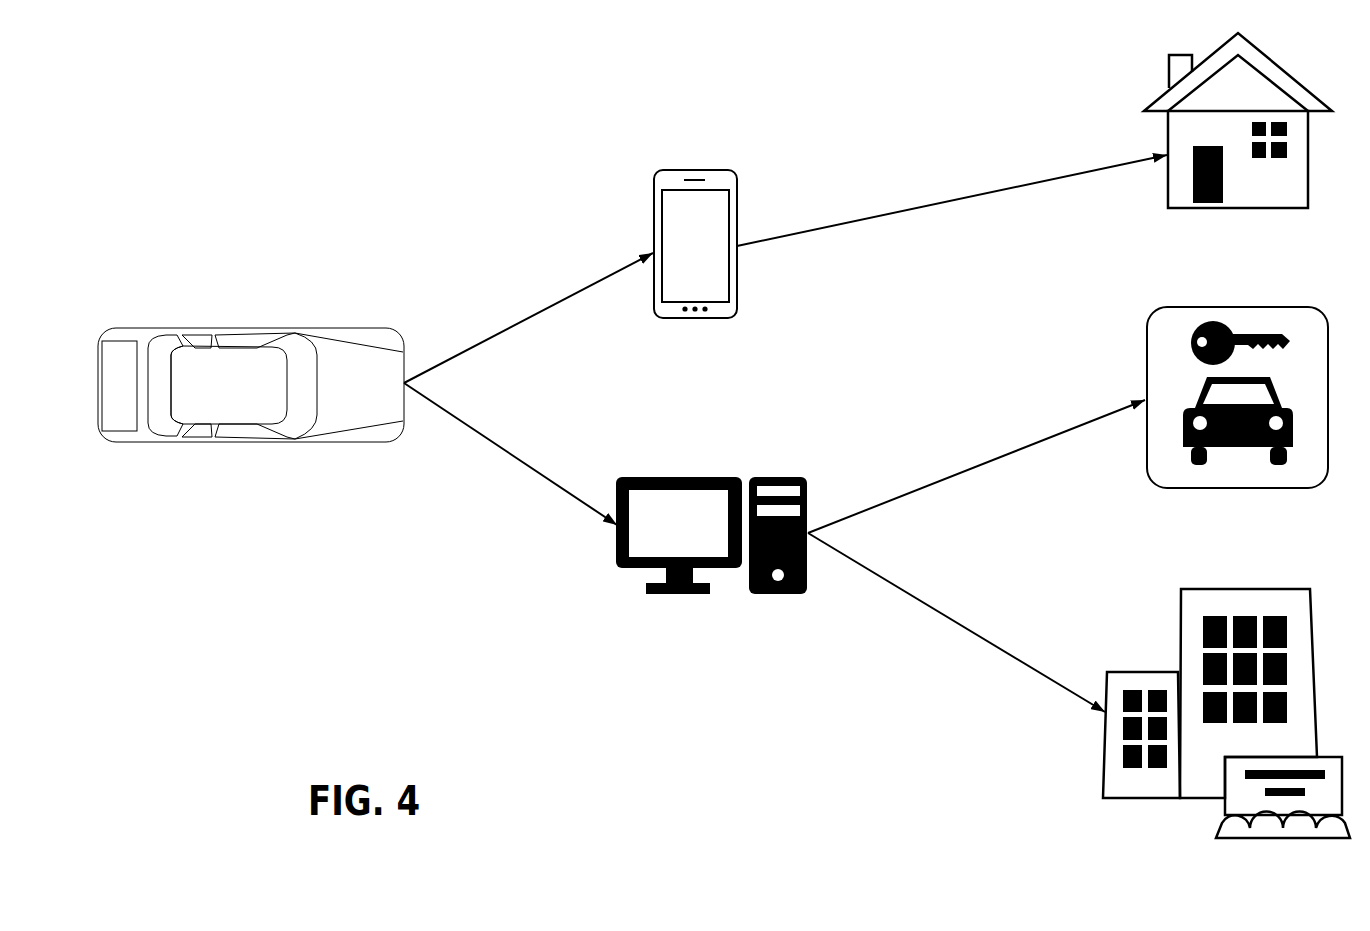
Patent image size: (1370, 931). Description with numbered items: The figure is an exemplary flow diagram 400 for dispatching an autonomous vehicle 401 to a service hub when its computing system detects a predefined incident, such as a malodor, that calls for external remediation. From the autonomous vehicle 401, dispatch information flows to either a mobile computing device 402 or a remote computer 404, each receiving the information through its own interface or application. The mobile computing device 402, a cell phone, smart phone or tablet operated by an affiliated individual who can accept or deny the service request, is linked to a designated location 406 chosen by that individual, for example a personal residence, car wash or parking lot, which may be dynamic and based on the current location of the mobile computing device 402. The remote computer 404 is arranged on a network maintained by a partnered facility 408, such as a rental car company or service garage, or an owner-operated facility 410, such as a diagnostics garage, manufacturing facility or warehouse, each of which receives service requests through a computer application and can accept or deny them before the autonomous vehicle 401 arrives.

The flow diagram 400 is at (180, 145).
The autonomous vehicle 401 is at (223, 329).
The mobile computing device 402 is at (673, 168).
The remote computer 404 is at (660, 477).
The designated location 406 is at (1160, 93).
The partnered facility 408 is at (1160, 310).
The owner-operated facility 410 is at (1196, 588).